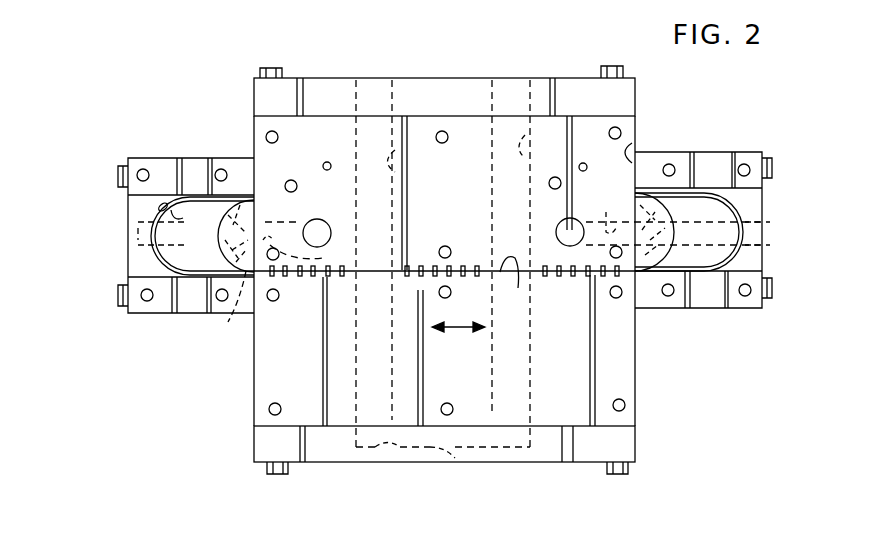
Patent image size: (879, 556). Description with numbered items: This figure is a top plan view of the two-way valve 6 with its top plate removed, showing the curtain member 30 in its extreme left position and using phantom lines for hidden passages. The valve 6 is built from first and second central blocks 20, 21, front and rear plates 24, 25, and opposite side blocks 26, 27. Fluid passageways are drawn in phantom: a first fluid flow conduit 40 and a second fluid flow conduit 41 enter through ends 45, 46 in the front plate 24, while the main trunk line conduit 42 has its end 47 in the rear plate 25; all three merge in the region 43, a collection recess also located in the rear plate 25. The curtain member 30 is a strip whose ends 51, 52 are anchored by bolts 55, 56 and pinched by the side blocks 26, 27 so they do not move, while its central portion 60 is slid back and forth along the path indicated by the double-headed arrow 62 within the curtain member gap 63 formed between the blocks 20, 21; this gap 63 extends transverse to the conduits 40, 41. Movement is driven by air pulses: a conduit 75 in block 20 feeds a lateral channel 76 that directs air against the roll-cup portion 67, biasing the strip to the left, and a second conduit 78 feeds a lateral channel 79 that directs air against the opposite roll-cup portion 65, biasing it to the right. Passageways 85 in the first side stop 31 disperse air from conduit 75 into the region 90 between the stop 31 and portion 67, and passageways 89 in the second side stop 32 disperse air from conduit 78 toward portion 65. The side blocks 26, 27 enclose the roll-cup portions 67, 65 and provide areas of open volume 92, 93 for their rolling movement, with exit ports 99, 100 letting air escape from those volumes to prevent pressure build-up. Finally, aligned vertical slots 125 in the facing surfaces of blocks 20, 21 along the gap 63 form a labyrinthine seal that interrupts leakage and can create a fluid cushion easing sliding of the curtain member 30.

The valve 6 is at (553, 60).
The first central block 20 is at (254, 130).
The second central block 21 is at (254, 370).
The front plate 24 is at (410, 78).
The rear plate 25 is at (580, 462).
The side block 26 is at (128, 208).
The side block 27 is at (720, 152).
The curtain member 30 is at (173, 262).
The first side stop 31 is at (220, 226).
The second side stop 32 is at (665, 238).
The first fluid flow conduit 40 is at (400, 168).
The second fluid flow conduit 41 is at (537, 148).
The main trunk line conduit 42 is at (428, 456).
The region 43 is at (388, 452).
The end 45 is at (357, 105).
The end 46 is at (500, 100).
The end 47 is at (465, 456).
The end 51 is at (254, 180).
The end 52 is at (630, 148).
The bolt 55 is at (118, 172).
The bolt 56 is at (770, 165).
The central portion 60 is at (487, 266).
The double-headed arrow 62 is at (458, 328).
The curtain member gap 63 is at (510, 283).
The portion 65 is at (668, 258).
The portion 67 is at (184, 214).
The conduit 75 is at (318, 234).
The lateral channel 76 is at (306, 244).
The second conduit 78 is at (570, 228).
The lateral channel 79 is at (678, 213).
The passageways 85 is at (255, 216).
The passageways 89 is at (672, 212).
The region 90 is at (226, 262).
The area of open volume 92 is at (172, 202).
The area of open volume 93 is at (686, 194).
The exit port 99 is at (132, 238).
The exit port 100 is at (760, 224).
The slots 125 is at (312, 280).